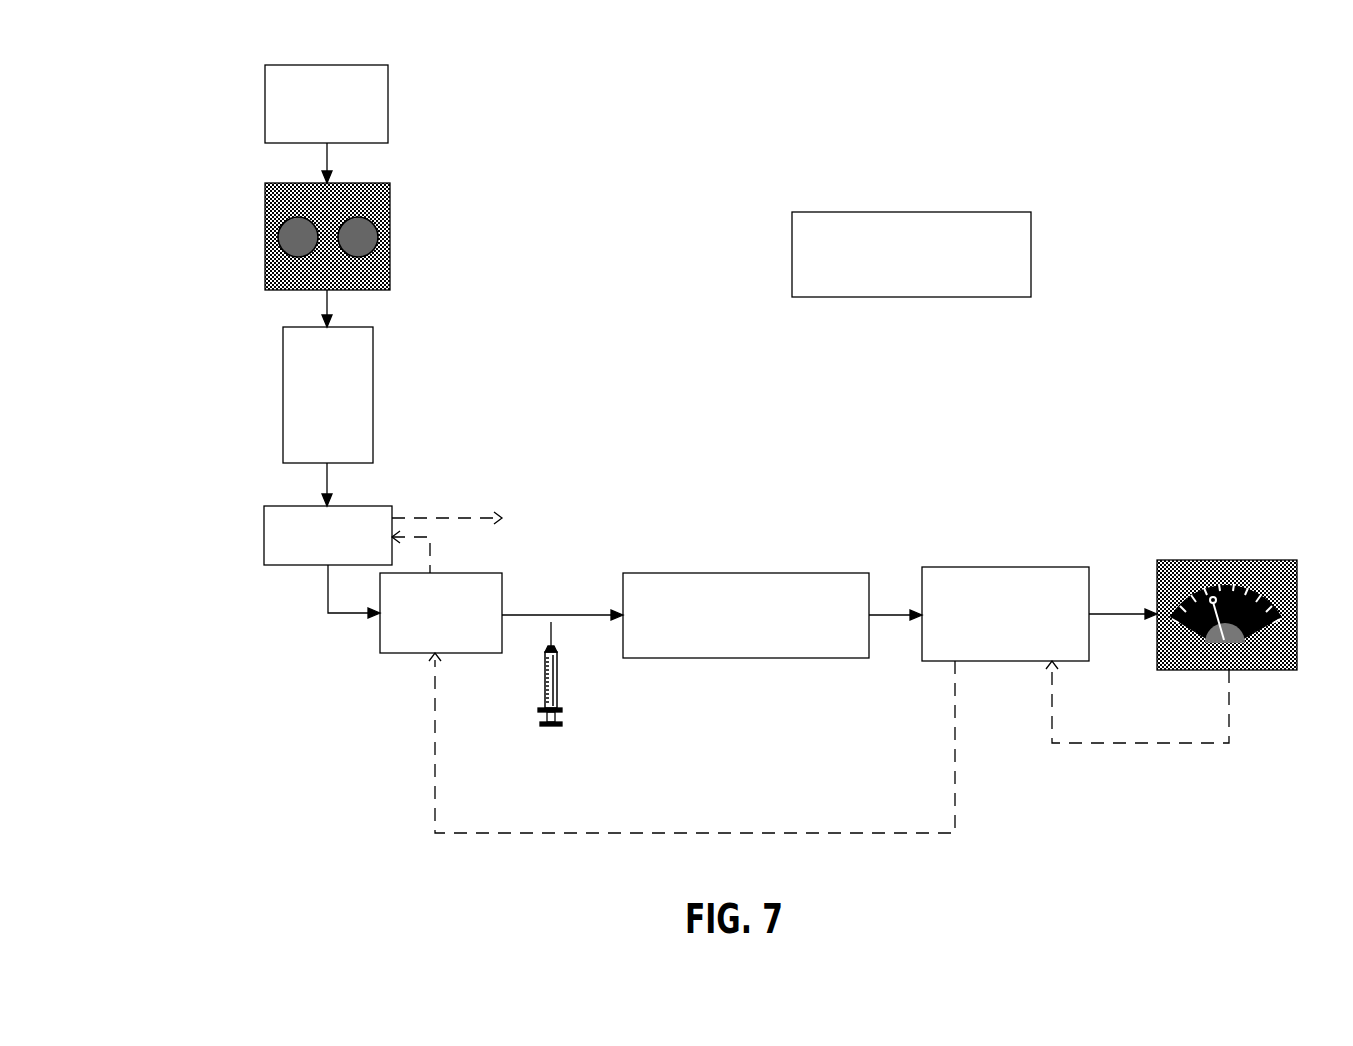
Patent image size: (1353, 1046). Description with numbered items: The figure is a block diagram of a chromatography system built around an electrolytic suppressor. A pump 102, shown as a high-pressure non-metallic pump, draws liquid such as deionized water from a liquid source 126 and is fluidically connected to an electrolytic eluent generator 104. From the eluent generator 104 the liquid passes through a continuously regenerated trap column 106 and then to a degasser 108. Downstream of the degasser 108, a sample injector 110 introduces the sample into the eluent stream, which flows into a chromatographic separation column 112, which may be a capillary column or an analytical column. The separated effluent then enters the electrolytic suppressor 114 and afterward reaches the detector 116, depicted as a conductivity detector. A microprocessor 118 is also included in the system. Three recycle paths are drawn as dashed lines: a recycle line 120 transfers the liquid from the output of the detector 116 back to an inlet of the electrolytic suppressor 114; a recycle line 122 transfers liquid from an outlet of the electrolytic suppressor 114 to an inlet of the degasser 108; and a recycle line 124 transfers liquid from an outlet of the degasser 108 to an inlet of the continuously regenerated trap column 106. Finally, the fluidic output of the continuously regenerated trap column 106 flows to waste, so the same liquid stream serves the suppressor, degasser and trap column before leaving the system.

The pump 102 is at (494, 307).
The electrolytic eluent generator 104 is at (178, 448).
The continuously regenerated trap column 106 is at (210, 614).
The degasser 108 is at (427, 649).
The sample injector 110 is at (541, 794).
The chromatographic separation column 112 is at (730, 642).
The electrolytic suppressor 114 is at (987, 659).
The detector 116 is at (1205, 547).
The microprocessor 118 is at (896, 287).
The recycle line 120 is at (1127, 814).
The recycle line 122 is at (752, 824).
The recycle line 124 is at (442, 562).
The liquid source 126 is at (403, 104).